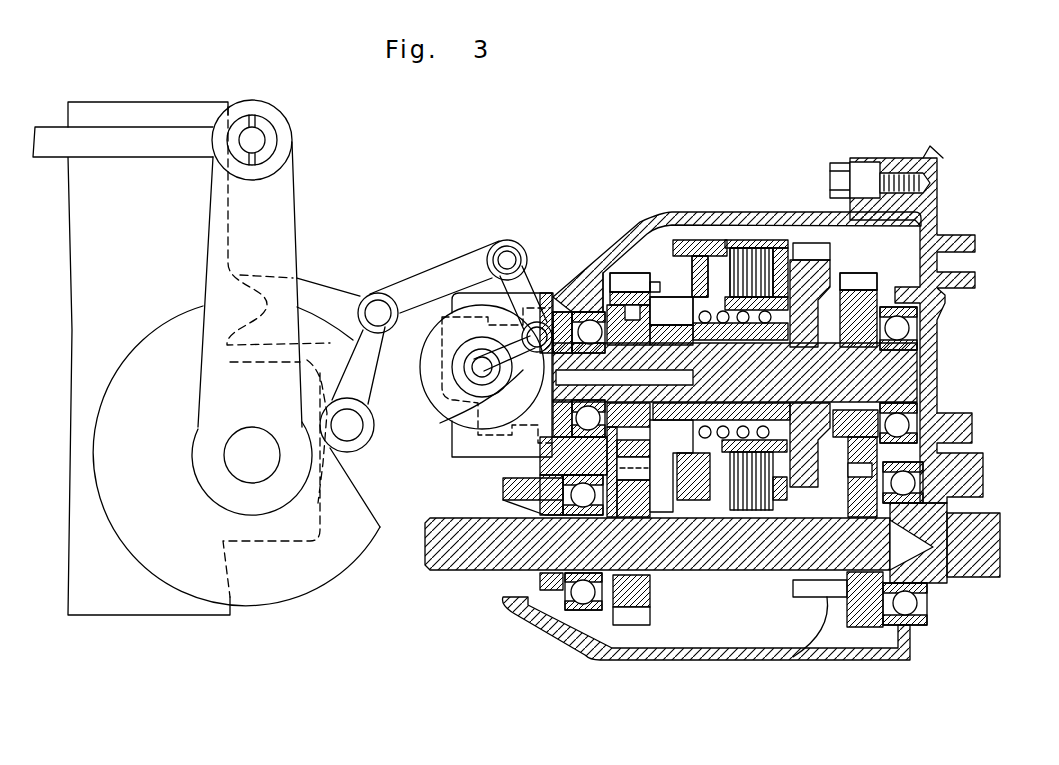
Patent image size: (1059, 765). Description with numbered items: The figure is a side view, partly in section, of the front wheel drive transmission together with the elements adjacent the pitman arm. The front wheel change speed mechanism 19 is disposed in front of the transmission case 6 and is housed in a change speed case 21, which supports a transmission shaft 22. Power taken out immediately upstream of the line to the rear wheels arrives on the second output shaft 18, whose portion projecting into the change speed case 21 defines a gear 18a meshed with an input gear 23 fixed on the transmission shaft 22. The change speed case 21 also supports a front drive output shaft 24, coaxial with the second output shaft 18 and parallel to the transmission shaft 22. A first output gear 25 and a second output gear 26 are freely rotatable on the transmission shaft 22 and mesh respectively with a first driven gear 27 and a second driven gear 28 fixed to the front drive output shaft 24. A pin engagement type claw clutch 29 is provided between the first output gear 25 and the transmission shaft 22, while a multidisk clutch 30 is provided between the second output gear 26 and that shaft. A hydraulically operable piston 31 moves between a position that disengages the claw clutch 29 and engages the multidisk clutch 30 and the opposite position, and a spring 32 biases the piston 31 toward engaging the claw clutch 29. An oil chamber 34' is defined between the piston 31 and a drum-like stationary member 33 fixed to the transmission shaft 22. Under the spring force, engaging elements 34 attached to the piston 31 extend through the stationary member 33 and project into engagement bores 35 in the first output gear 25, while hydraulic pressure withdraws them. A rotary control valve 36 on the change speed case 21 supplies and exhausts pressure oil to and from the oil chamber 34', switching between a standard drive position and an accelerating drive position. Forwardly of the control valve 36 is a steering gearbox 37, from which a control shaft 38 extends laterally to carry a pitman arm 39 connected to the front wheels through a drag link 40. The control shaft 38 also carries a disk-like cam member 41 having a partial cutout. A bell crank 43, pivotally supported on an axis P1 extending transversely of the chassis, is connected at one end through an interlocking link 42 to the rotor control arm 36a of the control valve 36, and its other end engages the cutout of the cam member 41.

The transmission case 6 is at (928, 150).
The second output shaft 18 is at (992, 513).
The gear 18a is at (862, 605).
The front wheel change speed mechanism 19 is at (737, 188).
The change speed case 21 is at (600, 270).
The transmission shaft 22 is at (937, 372).
The input gear 23 is at (860, 298).
The front drive output shaft 24 is at (763, 572).
The first output gear 25 is at (640, 274).
The second output gear 26 is at (810, 250).
The first driven gear 27 is at (632, 625).
The second driven gear 28 is at (825, 612).
The pin engagement type claw clutch 29 is at (662, 280).
The multidisk clutch 30 is at (748, 234).
The hydraulically operable piston 31 is at (702, 272).
The spring 32 is at (750, 426).
The drum-like stationary member 33 is at (690, 505).
The engaging elements 34 is at (665, 175).
The oil chamber 34' is at (680, 518).
The engagement bores 35 is at (603, 303).
The control valve 36 is at (481, 463).
The rotor control arm 36a is at (452, 418).
The steering gearbox 37 is at (165, 102).
The control shaft 38 is at (230, 477).
The pitman arm 39 is at (294, 227).
The drag link 40 is at (143, 157).
The disk-like cam member 41 is at (327, 583).
The interlocking link 42 is at (517, 270).
The bell crank 43 is at (423, 278).
The axis P1 is at (378, 313).